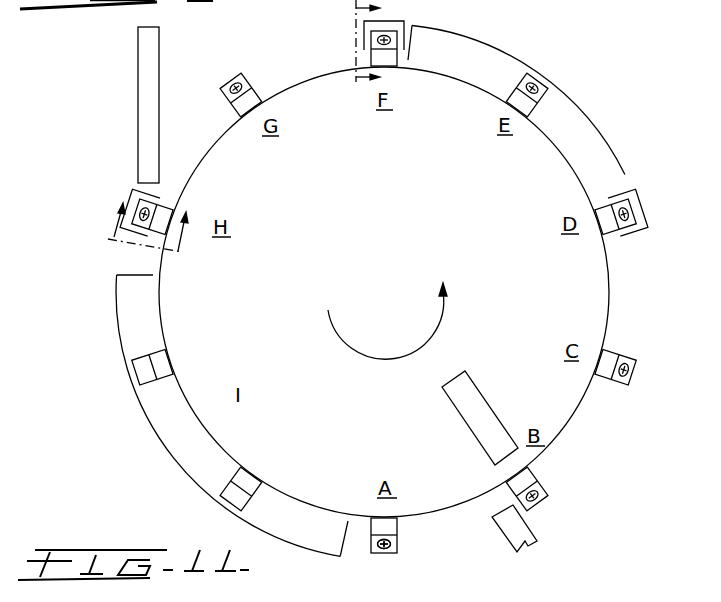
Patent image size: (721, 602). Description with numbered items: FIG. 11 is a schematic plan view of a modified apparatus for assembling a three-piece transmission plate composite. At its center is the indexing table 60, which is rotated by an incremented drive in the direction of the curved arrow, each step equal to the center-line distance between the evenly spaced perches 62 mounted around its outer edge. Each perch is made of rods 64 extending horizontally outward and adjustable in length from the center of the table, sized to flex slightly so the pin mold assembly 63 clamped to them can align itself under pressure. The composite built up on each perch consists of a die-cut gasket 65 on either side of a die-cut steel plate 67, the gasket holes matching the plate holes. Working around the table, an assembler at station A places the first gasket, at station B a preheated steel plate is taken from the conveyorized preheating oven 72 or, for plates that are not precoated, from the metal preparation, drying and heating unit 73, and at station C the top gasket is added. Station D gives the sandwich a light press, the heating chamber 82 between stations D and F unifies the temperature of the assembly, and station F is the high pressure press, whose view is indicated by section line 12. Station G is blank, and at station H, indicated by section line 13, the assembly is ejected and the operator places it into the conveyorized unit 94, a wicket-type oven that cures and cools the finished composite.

The section line 12- 12 is at (370, 41).
The section line 13- 13 is at (153, 224).
The indexing table 60 is at (610, 285).
The perches 62 is at (603, 386).
The pin mold assembly 63 is at (630, 211).
The rods 64 is at (250, 91).
The die-cut gasket 65 is at (376, 547).
The die-cut steel plate 67 is at (548, 486).
The conveyorized preheating oven 72 is at (473, 428).
The metal preparation, drying and heating unit 73 is at (528, 530).
The heating chamber 82 is at (565, 98).
The conveyorized unit 94 is at (148, 107).